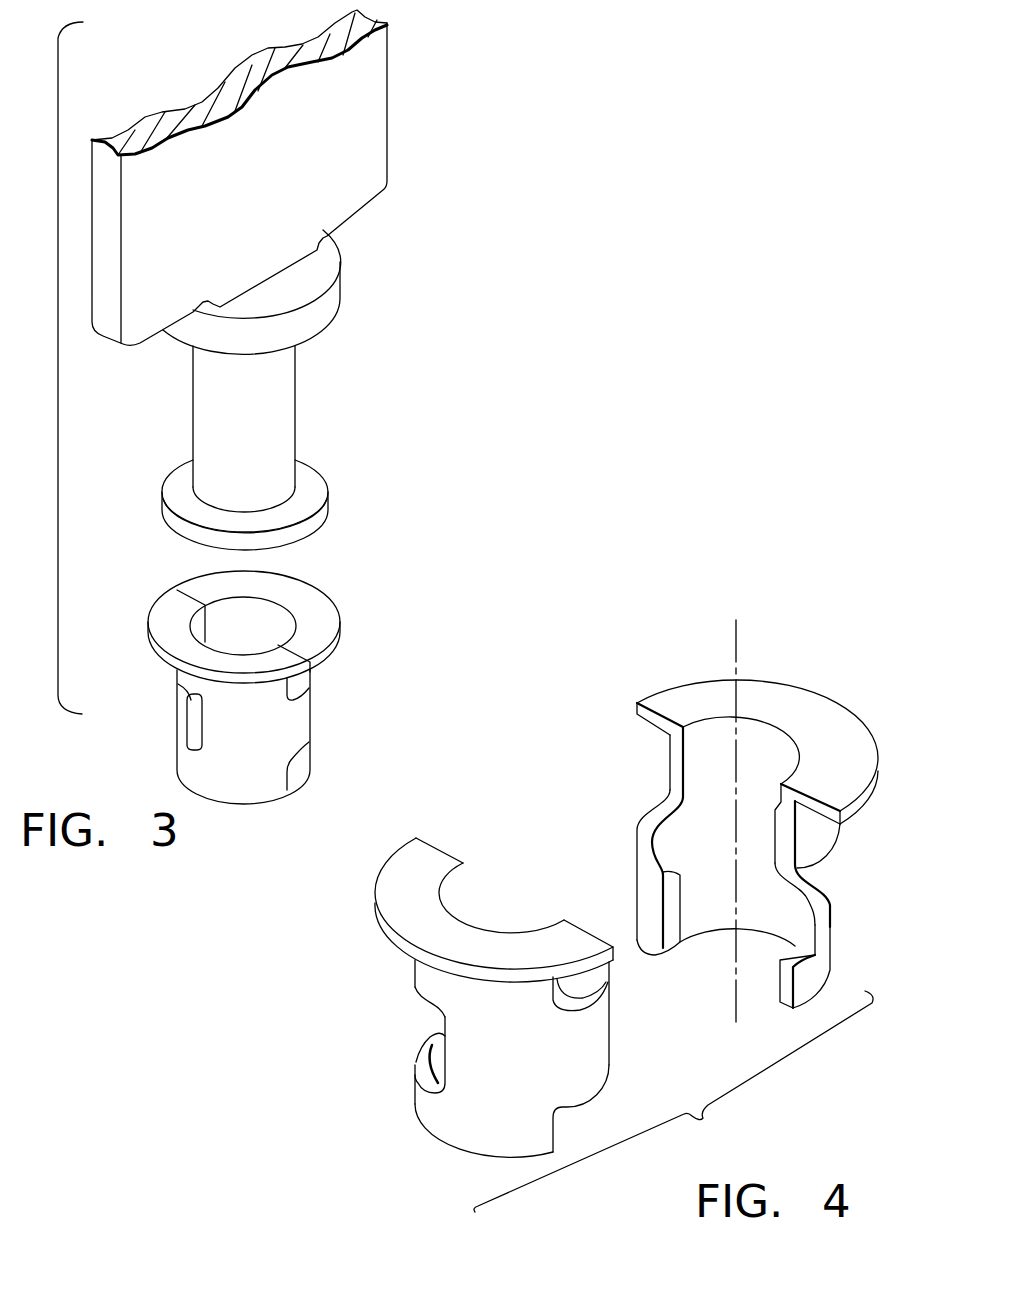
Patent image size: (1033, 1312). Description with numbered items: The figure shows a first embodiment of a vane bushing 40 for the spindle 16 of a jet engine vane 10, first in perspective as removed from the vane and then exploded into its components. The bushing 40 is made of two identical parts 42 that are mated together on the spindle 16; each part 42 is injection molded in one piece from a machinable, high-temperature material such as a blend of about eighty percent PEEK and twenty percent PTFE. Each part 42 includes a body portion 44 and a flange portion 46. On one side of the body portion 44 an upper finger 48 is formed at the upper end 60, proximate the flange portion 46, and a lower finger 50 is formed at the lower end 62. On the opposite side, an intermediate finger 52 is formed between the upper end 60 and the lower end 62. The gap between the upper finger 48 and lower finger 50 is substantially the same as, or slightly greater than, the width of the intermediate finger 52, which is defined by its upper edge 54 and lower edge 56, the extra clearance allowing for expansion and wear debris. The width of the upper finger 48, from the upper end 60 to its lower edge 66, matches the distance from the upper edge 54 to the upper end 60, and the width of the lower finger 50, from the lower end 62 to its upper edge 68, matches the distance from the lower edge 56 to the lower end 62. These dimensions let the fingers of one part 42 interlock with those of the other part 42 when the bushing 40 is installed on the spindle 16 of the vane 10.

In FIG. 3, the vane 10 is at (418, 100).
In FIG. 3, the spindle 16 is at (297, 405).
In FIG. 3, the vane bushing 40 is at (343, 590).
In FIG. 4, the part 42 is at (360, 873).
In FIG. 4, the body portion 44 is at (473, 1077).
In FIG. 4, the flange portion 46 is at (393, 920).
In FIG. 4, the upper finger 48 is at (460, 903).
In FIG. 4, the lower finger 50 is at (427, 1033).
In FIG. 4, the intermediate finger 52 is at (600, 1060).
In FIG. 4, the upper edge 54 is at (598, 988).
In FIG. 4, the lower edge 56 is at (587, 1097).
In FIG. 4, the upper end 60 is at (452, 883).
In FIG. 4, the lower end 62 is at (543, 1157).
In FIG. 4, the lower edge 66 is at (415, 982).
In FIG. 4, the upper edge 68 is at (415, 1064).